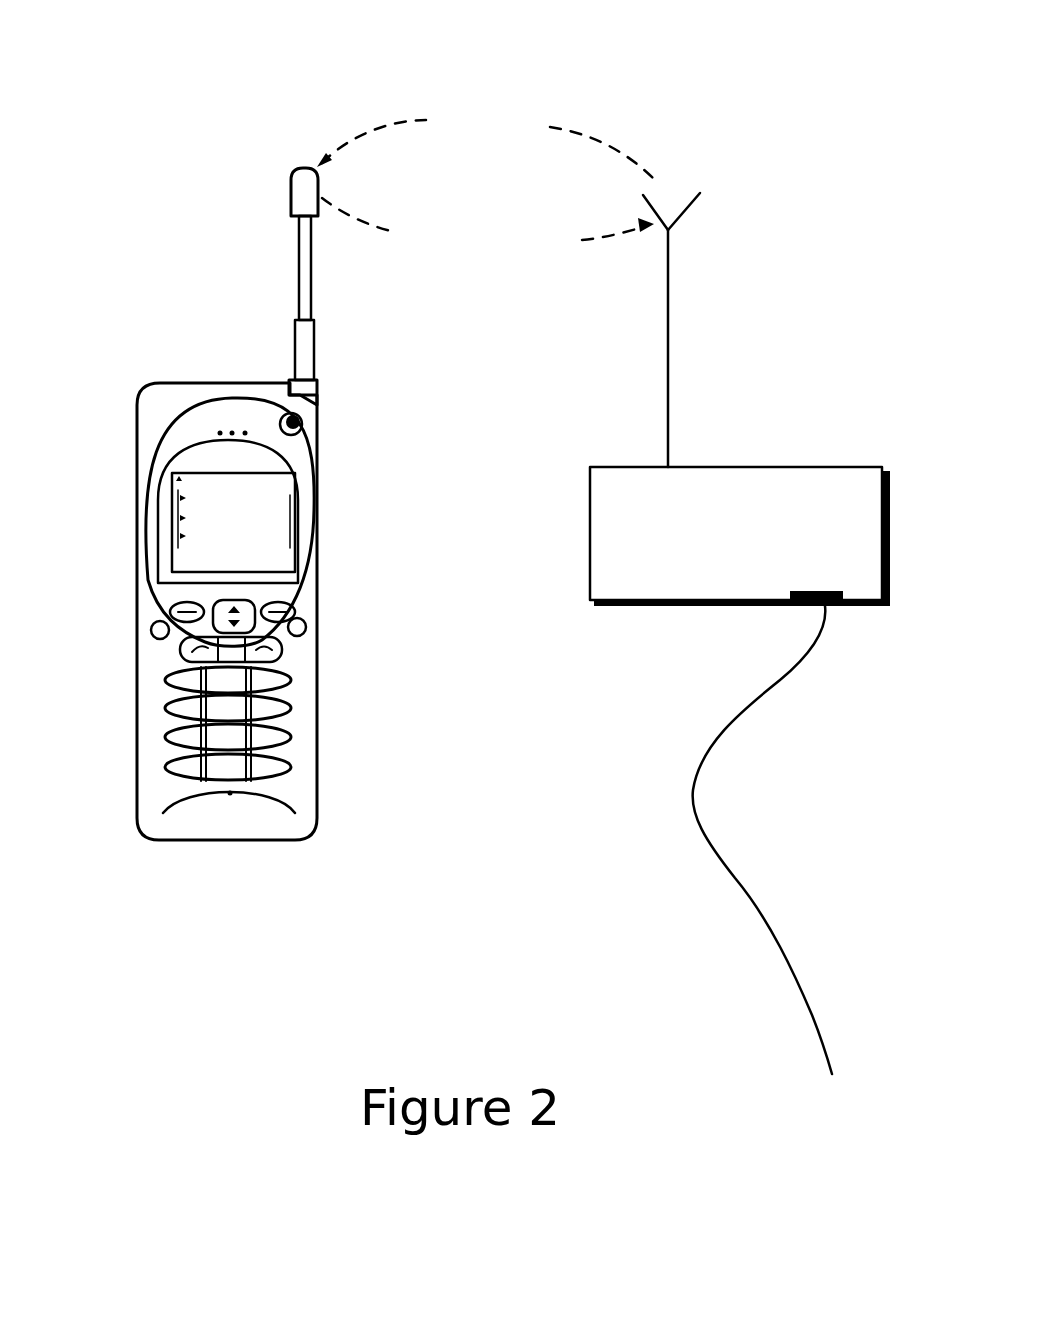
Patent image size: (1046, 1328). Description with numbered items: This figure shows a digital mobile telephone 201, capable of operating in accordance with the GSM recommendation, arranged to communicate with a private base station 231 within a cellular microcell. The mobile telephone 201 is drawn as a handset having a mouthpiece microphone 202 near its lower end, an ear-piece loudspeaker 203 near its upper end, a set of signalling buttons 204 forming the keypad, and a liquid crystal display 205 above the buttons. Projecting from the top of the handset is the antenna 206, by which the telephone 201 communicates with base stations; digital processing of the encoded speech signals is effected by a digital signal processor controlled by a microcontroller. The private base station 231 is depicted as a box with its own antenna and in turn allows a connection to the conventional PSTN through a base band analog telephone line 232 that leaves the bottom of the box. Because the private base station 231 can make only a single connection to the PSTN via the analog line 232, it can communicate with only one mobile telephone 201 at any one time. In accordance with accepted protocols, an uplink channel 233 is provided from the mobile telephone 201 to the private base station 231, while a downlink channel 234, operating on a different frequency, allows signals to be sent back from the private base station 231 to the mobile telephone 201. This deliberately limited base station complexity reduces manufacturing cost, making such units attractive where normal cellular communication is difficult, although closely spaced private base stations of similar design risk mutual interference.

The mobile telephone 201 is at (198, 826).
The mouthpiece microphone 202 is at (232, 796).
The ear-piece loudspeaker 203 is at (190, 422).
The signalling buttons 204 is at (172, 703).
The liquid crystal display 205 is at (270, 532).
The antenna 206 is at (304, 266).
The private base station 231 is at (750, 487).
The base band analog telephone line 232 is at (692, 797).
The uplink channel 233 is at (608, 148).
The downlink channel 234 is at (390, 228).